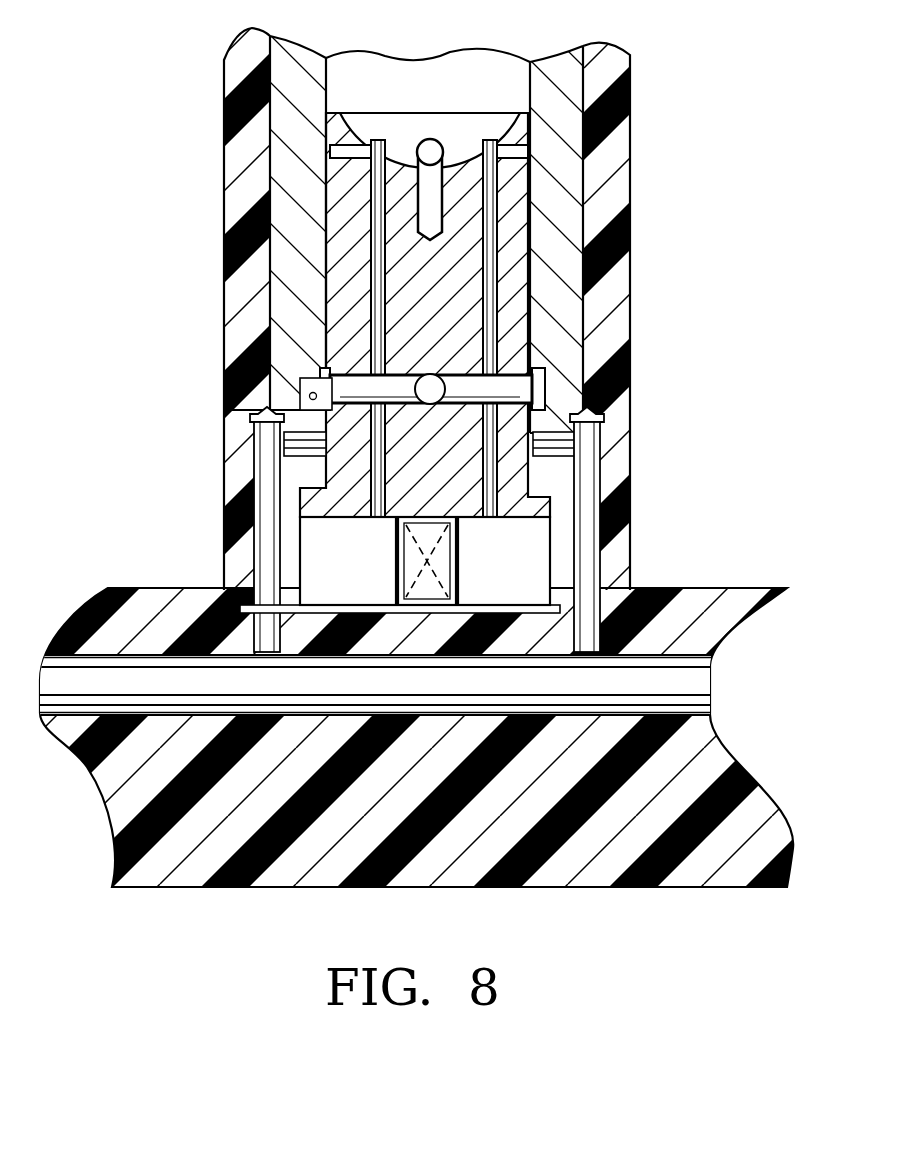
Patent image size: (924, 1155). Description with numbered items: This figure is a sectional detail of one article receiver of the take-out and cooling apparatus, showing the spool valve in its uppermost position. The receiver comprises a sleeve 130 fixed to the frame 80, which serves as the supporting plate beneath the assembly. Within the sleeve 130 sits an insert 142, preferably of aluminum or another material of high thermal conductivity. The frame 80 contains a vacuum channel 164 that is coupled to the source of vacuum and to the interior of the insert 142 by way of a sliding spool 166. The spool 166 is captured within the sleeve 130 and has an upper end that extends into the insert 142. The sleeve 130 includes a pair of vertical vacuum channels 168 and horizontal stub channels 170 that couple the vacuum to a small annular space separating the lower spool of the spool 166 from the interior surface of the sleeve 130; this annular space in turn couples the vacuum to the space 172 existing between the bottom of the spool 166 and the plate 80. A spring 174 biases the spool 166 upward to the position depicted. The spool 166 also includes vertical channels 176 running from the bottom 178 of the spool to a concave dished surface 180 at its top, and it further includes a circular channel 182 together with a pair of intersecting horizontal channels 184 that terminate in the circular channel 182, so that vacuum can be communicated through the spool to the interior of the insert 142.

The frame 80 is at (603, 863).
The sleeve 130 is at (610, 274).
The insert 142 is at (563, 158).
The vacuum channel 164 is at (672, 695).
The sliding spool 166 is at (343, 288).
The vertical vacuum channels 168 is at (264, 490).
The horizontal stub channels 170 is at (290, 440).
The space 172 is at (510, 580).
The spring 174 is at (395, 582).
The vertical channels 176 is at (370, 322).
The bottom of the spool 178 is at (325, 535).
The concave dished surface 180 is at (372, 151).
The circular channel 182 is at (335, 365).
The intersecting horizontal channels 184 is at (500, 372).